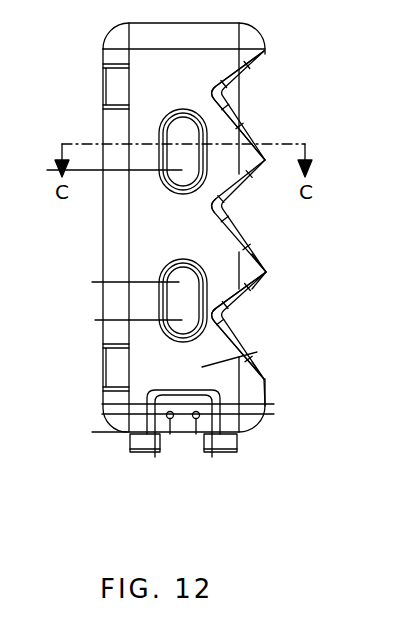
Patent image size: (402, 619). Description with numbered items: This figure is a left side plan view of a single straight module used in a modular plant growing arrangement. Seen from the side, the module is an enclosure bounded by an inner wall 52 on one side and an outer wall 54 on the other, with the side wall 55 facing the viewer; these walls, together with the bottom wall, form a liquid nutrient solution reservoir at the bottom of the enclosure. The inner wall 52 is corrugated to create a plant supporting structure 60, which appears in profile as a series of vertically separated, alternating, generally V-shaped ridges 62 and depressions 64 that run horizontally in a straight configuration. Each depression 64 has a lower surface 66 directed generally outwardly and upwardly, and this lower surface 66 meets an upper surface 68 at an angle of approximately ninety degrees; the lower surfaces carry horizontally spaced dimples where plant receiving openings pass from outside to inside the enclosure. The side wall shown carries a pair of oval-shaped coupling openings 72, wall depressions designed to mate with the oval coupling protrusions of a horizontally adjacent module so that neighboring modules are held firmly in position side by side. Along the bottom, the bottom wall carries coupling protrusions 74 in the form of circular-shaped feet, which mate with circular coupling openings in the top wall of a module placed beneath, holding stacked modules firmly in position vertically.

The inner wall 52 is at (247, 59).
The outer wall 54 is at (76, 81).
The side wall 55 is at (241, 327).
The plant supporting structure 60 is at (256, 364).
The ridges 62 is at (257, 264).
The depressions 64 is at (227, 207).
The lower surface 66 is at (227, 114).
The upper surface 68 is at (237, 287).
The coupling openings 72 is at (162, 199).
The coupling protrusions 74 is at (122, 436).